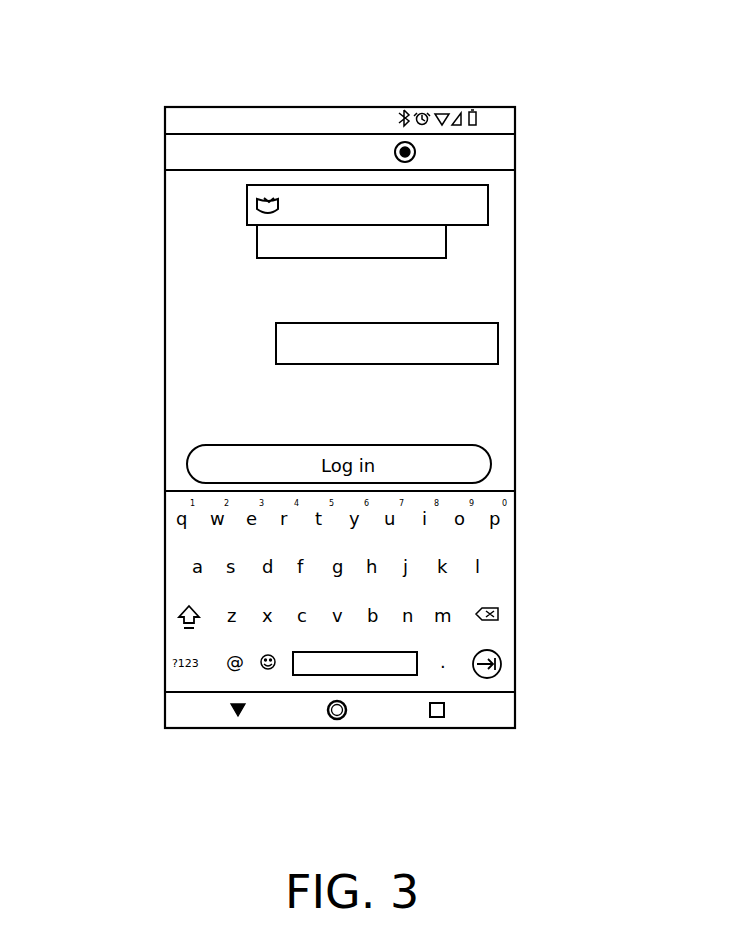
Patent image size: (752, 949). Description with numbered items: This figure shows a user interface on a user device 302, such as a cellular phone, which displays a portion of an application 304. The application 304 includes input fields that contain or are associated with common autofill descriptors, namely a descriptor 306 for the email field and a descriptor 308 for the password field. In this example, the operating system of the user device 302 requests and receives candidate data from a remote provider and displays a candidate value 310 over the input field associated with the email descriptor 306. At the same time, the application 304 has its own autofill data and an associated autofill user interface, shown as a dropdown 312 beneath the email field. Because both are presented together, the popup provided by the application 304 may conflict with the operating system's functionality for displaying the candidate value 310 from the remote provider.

The user device 302 is at (308, 106).
The application 304 is at (180, 155).
The descriptor 306 is at (176, 204).
The descriptor 308 is at (166, 332).
The candidate value 310 is at (488, 200).
The dropdown 312 is at (446, 258).